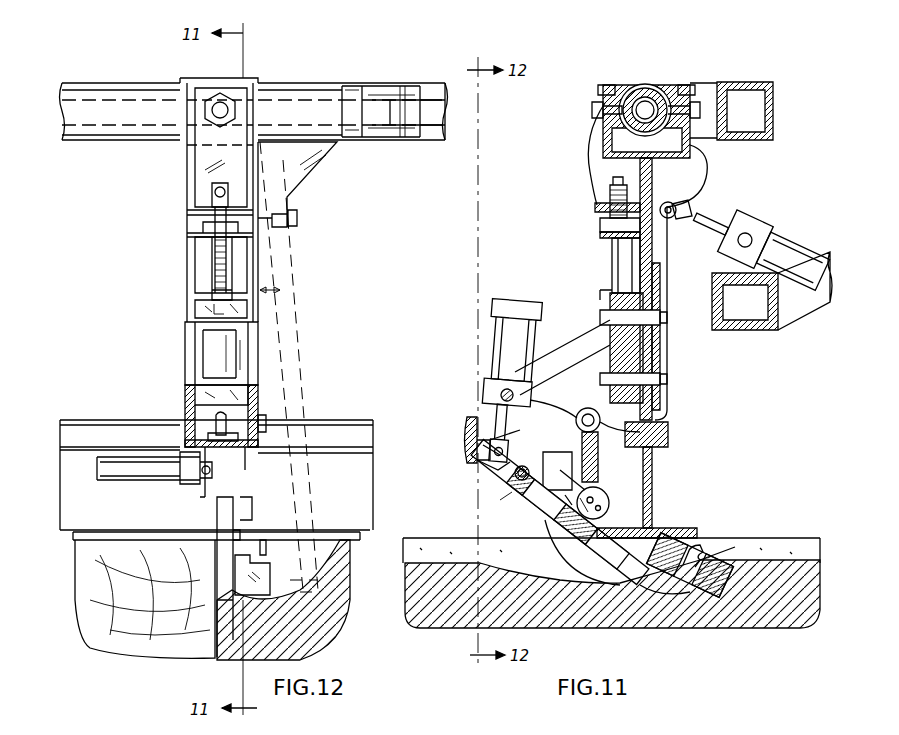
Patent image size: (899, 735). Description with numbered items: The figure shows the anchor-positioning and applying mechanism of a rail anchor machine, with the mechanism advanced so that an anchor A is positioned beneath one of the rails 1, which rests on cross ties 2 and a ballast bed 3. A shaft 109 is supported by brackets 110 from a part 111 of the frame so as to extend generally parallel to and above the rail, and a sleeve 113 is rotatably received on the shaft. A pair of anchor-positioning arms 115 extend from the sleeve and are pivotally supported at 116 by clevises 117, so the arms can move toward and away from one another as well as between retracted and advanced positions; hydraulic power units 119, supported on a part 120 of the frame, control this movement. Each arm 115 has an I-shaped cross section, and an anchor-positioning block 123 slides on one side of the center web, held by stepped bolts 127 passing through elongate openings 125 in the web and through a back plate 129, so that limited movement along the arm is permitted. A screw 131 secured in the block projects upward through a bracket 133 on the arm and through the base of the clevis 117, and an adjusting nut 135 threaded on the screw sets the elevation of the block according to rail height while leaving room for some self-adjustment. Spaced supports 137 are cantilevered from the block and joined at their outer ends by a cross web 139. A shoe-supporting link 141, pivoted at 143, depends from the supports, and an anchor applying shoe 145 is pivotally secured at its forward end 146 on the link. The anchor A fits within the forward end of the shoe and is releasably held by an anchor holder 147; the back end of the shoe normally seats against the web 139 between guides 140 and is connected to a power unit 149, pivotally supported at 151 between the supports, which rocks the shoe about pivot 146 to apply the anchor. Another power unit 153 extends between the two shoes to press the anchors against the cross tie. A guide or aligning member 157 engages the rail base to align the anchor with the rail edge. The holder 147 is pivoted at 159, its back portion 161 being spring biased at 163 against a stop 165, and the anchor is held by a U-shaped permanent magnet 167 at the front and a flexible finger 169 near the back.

In FIG. 12, the rail 1 is at (78, 422).
In FIG. 11, the rail 1 is at (670, 433).
In FIG. 12, the cross tie 2 is at (113, 643).
In FIG. 11, the cross tie 2 is at (440, 537).
In FIG. 12, the ballast bed 3 is at (346, 620).
In FIG. 11, the ballast bed 3 is at (772, 623).
In FIG. 12, the shaft 109 is at (392, 127).
In FIG. 11, the shaft 109 is at (634, 97).
In FIG. 12, the bracket 110 is at (411, 86).
In FIG. 11, the bracket 110 is at (687, 103).
In FIG. 11, the part of the frame 111 is at (774, 110).
In FIG. 12, the sleeve 113 is at (128, 138).
In FIG. 11, the sleeve 113 is at (652, 92).
In FIG. 12, the anchor-positioning arm 115 is at (187, 233).
In FIG. 11, the anchor-positioning arm 115 is at (600, 292).
In FIG. 12, the pivot 116 is at (237, 128).
In FIG. 11, the pivot 116 is at (598, 110).
In FIG. 12, the clevis 117 is at (188, 182).
In FIG. 11, the clevis 117 is at (597, 203).
In FIG. 11, the hydraulic power unit 119 is at (786, 230).
In FIG. 11, the part of the frame 120 is at (771, 330).
In FIG. 12, the anchor-positioning block 123 is at (195, 297).
In FIG. 11, the anchor-positioning block 123 is at (645, 356).
In FIG. 11, the elongate opening 125 is at (662, 332).
In FIG. 11, the stepped bolt 127 is at (661, 315).
In FIG. 11, the back plate 129 is at (657, 300).
In FIG. 11, the screw 131 is at (612, 272).
In FIG. 12, the bracket 133 is at (187, 211).
In FIG. 11, the bracket 133 is at (600, 236).
In FIG. 11, the adjusting nut 135 is at (600, 228).
In FIG. 11, the support 137 is at (566, 392).
In FIG. 12, the cross web 139 is at (195, 432).
In FIG. 11, the cross web 139 is at (467, 430).
In FIG. 12, the guide 140 is at (262, 452).
In FIG. 11, the guide 140 is at (472, 456).
In FIG. 11, the shoe-supporting link 141 is at (606, 500).
In FIG. 11, the pivot 143 is at (600, 429).
In FIG. 12, the anchor applying shoe 145 is at (217, 516).
In FIG. 11, the anchor applying shoe 145 is at (488, 470).
In FIG. 11, the forward end pivot 146 is at (602, 506).
In FIG. 12, the anchor holder 147 is at (240, 562).
In FIG. 11, the anchor holder 147 is at (705, 551).
In FIG. 12, the power unit 149 is at (195, 350).
In FIG. 11, the power unit 149 is at (490, 340).
In FIG. 11, the pivot 151 is at (505, 396).
In FIG. 12, the power unit 153 is at (108, 468).
In FIG. 11, the guide or aligning member 157 is at (610, 516).
In FIG. 11, the pivot 159 is at (560, 552).
In FIG. 11, the back portion of the holder 161 is at (530, 518).
In FIG. 11, the spring 163 is at (516, 478).
In FIG. 11, the stop 165 is at (500, 506).
In FIG. 11, the U-shaped permanent magnet 167 is at (652, 590).
In FIG. 11, the flexible finger 169 is at (635, 599).
In FIG. 11, the rail anchor A is at (733, 544).